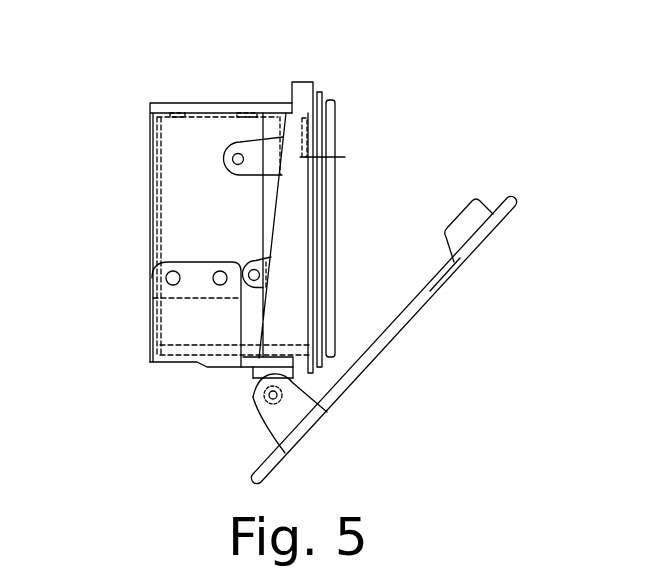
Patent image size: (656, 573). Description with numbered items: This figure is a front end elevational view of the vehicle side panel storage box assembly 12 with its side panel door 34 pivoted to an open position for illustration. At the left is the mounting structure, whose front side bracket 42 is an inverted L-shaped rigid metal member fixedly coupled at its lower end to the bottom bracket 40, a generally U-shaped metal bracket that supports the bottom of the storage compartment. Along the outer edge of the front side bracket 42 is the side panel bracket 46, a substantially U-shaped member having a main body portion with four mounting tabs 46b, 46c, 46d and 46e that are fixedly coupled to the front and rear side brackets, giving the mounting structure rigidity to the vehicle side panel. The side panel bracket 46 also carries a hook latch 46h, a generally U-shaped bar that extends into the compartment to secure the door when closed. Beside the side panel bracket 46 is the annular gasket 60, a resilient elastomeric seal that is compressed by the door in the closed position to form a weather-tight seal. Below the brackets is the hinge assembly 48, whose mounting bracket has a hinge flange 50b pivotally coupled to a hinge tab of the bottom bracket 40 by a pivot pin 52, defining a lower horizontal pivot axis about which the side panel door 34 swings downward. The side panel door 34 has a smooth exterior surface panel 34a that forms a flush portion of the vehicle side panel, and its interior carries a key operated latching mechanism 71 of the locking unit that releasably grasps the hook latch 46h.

The vehicle side panel storage box assembly 12 is at (449, 93).
The side panel door 34 is at (517, 196).
The exterior surface panel 34a is at (437, 303).
The bottom bracket 40 is at (150, 366).
The front side bracket 42 is at (197, 213).
The side panel bracket 46 is at (318, 80).
The mounting tab 46b is at (248, 148).
The mounting tab 46c is at (265, 277).
The mounting tab 46d is at (240, 143).
The mounting tab 46e is at (270, 265).
The hook latch 46h is at (345, 157).
The hinge assembly 48 is at (321, 391).
The hinge flange 50b is at (287, 426).
The pivot pin 52 is at (258, 405).
The annular gasket 60 is at (333, 100).
The key operated latching mechanism 71 is at (482, 190).